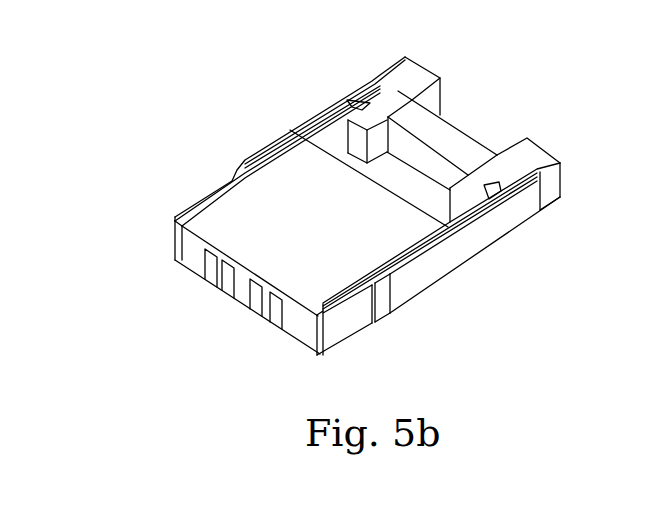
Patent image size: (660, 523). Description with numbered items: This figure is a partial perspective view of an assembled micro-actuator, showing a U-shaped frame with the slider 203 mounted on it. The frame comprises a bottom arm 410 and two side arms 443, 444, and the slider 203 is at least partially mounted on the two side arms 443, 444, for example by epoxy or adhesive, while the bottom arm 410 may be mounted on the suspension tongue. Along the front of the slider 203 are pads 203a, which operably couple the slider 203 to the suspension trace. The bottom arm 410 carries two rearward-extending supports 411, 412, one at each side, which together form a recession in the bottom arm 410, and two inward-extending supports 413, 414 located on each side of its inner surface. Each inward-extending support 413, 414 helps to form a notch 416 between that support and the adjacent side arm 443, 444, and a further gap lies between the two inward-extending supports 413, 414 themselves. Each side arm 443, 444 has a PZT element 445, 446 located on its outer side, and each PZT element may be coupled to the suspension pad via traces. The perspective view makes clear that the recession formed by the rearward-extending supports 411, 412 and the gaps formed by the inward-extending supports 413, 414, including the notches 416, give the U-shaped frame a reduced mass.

The slider 203 is at (227, 222).
The pad 203a is at (278, 323).
The bottom arm 410 is at (462, 143).
The rearward-extending support 411 is at (413, 73).
The rearward-extending support 412 is at (533, 158).
The inward-extending support 413 is at (318, 112).
The inward-extending support 414 is at (480, 213).
The notch 416 is at (490, 197).
The side arm 443 is at (215, 205).
The side arm 444 is at (350, 327).
The PZT element 445 is at (430, 282).
The PZT element 446 is at (280, 133).